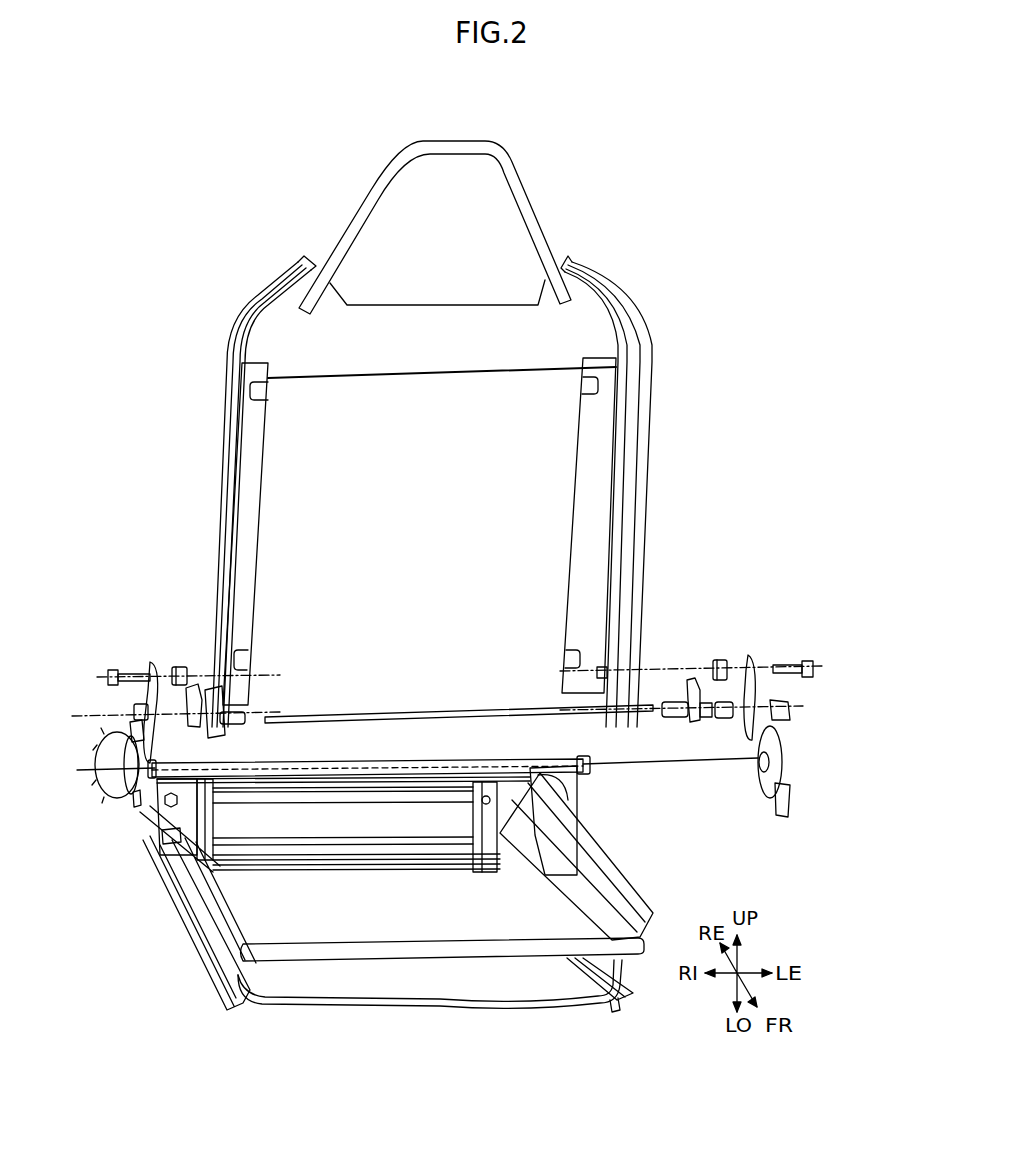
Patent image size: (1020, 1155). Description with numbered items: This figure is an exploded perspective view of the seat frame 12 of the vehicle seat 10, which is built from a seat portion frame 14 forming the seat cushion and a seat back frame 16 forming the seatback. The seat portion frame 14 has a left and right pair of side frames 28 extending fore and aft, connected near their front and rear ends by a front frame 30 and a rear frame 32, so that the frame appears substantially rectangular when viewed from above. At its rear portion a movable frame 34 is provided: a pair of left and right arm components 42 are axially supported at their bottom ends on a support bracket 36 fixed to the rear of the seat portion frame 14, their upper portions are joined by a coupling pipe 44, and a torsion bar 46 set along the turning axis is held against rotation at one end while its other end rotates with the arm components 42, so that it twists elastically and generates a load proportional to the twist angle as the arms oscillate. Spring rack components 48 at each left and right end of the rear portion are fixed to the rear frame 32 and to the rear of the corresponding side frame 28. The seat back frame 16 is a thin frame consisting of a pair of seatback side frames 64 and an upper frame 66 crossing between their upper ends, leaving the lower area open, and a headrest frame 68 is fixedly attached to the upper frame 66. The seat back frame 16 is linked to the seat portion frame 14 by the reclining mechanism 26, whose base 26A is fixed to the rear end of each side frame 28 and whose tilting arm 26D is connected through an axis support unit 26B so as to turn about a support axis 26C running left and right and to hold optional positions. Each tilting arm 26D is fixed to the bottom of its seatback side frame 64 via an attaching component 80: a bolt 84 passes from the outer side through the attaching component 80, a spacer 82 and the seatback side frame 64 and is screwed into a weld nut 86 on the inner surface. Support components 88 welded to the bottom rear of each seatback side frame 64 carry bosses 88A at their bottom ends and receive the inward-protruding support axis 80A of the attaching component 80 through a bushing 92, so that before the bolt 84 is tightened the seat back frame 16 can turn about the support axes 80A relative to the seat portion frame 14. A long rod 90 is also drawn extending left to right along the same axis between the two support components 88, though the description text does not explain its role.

The vehicle seat 10 is at (504, 434).
The seat frame 12 is at (504, 434).
The seat portion frame 14 is at (403, 886).
The seat back frame 16 is at (685, 492).
The reclining mechanism 26 is at (445, 779).
The base 26A is at (135, 795).
The axis support unit 26B is at (100, 792).
The support axis 26C is at (671, 785).
The tilting arm 26D is at (135, 723).
The side frame 28 is at (187, 927).
The front frame 30 is at (443, 955).
The rear frame 32 is at (220, 770).
The movable frame 34 is at (292, 877).
The support bracket 36 is at (370, 853).
The arm component 42 is at (213, 822).
The coupling pipe 44 is at (343, 793).
The torsion bar 46 is at (410, 850).
The spring rack component 48 is at (183, 765).
The seatback side frame 64 is at (255, 497).
The upper frame 66 is at (460, 372).
The headrest frame 68 is at (517, 180).
The attaching component 80 is at (153, 662).
The support axis 80A is at (140, 710).
The spacer 82 is at (180, 667).
The bolt 84 is at (132, 673).
The weld nut 86 is at (604, 668).
The support component 88 is at (210, 690).
The boss 88A is at (233, 703).
The connecting rod 90 is at (482, 713).
The bushing 92 is at (173, 717).